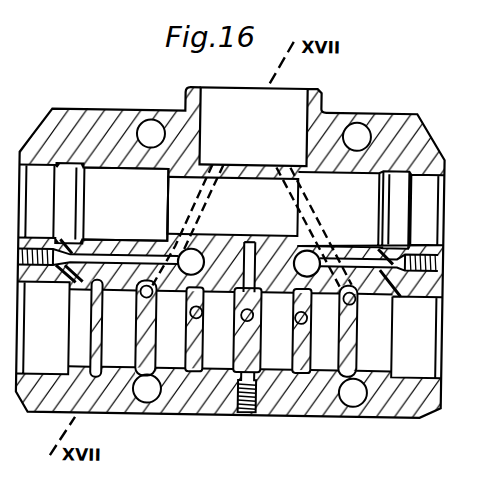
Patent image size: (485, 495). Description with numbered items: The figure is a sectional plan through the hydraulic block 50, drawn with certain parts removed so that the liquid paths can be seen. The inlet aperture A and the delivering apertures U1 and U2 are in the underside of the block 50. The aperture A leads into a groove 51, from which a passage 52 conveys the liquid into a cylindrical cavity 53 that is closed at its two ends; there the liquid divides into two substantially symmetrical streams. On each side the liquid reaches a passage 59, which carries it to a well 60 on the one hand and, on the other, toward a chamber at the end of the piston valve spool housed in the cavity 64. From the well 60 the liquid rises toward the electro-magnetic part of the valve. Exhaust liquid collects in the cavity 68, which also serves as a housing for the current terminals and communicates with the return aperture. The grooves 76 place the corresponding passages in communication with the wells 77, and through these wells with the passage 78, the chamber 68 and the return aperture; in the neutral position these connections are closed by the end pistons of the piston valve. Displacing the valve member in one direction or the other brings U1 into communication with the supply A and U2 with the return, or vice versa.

The hydraulic block 50 is at (86, 135).
The groove 51 is at (242, 365).
The passage 52 is at (264, 229).
The cylindrical cavity 53 is at (174, 212).
The passage 59 is at (112, 258).
The well 60 is at (195, 250).
The cavity 64 is at (284, 363).
The cavity 68 is at (240, 149).
The grooves 76 is at (149, 346).
The wells 77 is at (146, 296).
The passage 78 is at (191, 211).
The delivering aperture U1 is at (192, 316).
The delivering aperture U2 is at (309, 318).
The inlet aperture A is at (247, 330).